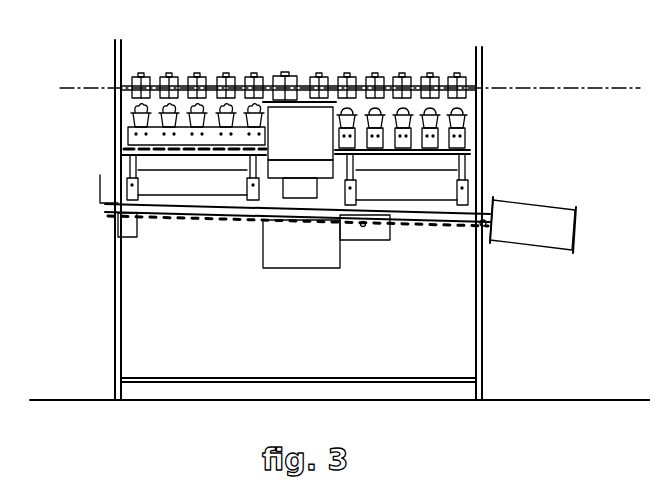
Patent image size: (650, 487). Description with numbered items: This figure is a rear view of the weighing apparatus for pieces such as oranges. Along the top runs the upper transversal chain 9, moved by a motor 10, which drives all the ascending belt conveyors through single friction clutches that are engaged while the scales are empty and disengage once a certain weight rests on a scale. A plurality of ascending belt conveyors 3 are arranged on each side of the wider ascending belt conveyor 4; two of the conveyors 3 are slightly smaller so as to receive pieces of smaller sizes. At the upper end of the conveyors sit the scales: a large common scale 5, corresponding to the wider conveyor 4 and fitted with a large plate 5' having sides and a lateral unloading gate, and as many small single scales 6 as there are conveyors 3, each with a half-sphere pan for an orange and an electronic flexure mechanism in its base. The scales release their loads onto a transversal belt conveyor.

The ascending belt conveyor 3 is at (172, 77).
The ascending belt conveyor 4 is at (285, 76).
The large scale 5 is at (299, 106).
The large plate 5' is at (298, 229).
The small scale 6 is at (130, 118).
The upper transversal chain 9 is at (415, 227).
The motor 10 is at (525, 235).